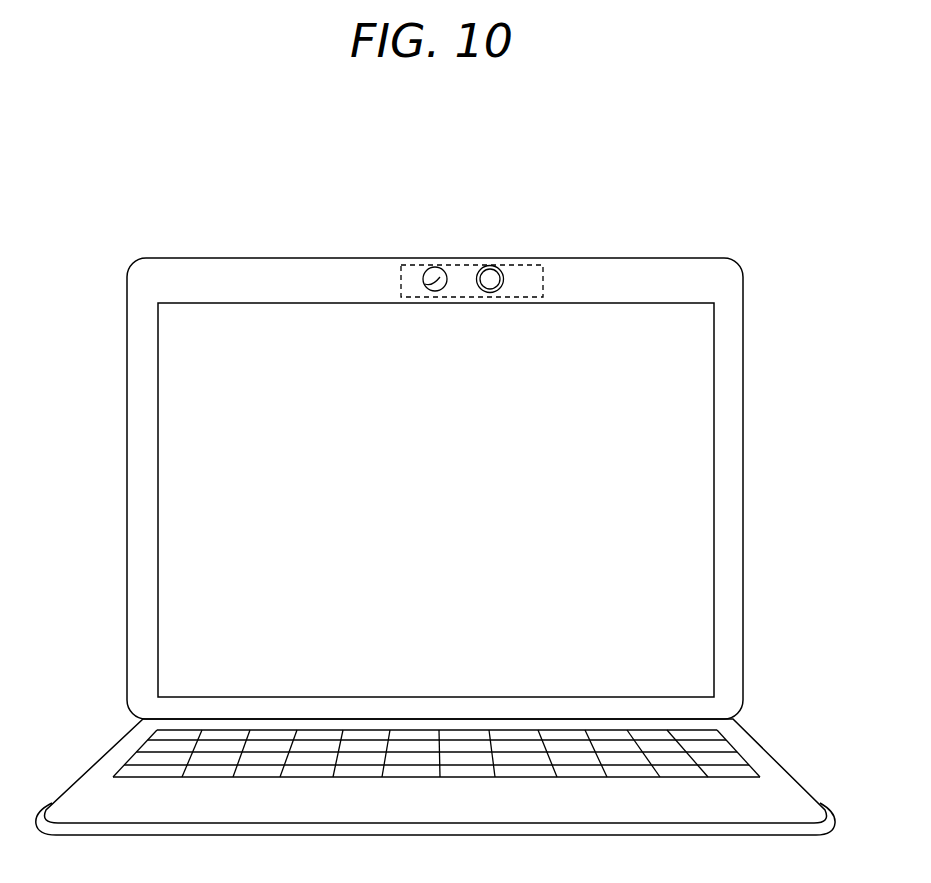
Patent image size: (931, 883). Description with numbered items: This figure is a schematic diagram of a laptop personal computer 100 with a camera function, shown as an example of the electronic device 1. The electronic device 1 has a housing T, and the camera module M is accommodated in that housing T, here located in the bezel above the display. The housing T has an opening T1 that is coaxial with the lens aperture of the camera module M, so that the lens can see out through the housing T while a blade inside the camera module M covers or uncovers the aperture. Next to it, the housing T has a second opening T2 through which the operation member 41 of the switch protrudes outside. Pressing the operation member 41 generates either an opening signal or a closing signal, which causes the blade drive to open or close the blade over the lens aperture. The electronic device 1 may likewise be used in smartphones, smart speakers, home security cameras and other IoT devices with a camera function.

The laptop personal computer 100 is at (728, 210).
The electronic device 1 is at (435, 500).
The housing T is at (303, 258).
The camera module M is at (465, 262).
The opening T1 is at (440, 270).
The opening T2 is at (492, 275).
The operation member 41 is at (497, 267).